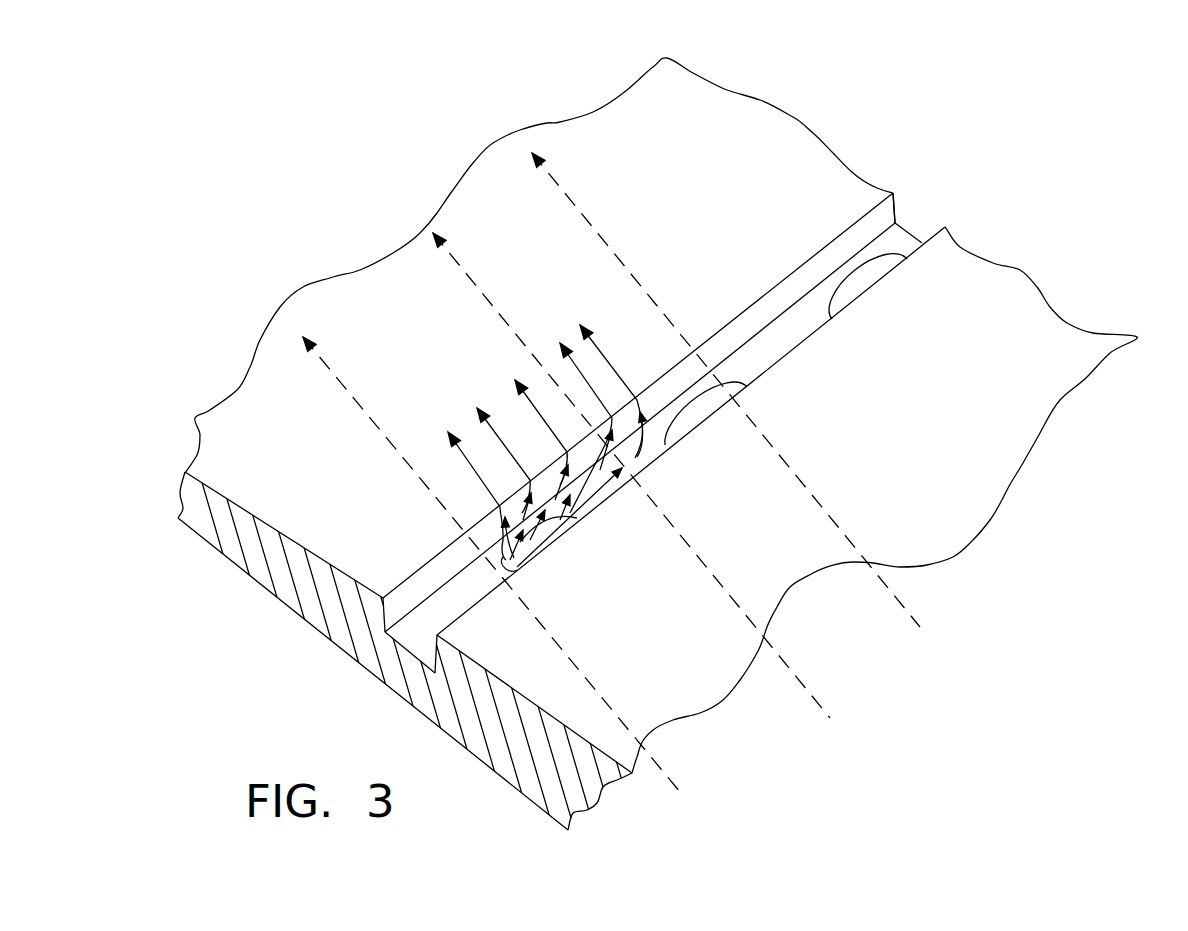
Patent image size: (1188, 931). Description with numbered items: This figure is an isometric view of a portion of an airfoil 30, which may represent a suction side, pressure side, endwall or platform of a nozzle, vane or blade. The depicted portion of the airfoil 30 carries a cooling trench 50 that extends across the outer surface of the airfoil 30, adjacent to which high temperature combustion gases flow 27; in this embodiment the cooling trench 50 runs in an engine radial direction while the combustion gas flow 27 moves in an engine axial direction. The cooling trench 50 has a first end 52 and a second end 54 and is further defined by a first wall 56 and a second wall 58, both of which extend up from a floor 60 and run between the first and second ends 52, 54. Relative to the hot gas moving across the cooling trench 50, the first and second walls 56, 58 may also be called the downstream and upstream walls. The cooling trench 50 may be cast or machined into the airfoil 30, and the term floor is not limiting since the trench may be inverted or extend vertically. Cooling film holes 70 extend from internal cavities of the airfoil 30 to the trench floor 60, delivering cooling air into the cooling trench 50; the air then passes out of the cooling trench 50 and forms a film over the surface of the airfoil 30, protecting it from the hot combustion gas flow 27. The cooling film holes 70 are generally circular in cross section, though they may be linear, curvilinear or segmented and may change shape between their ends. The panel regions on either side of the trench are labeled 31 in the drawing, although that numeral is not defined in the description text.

The combustion gas flow 27 is at (825, 507).
The airfoil 30 is at (1062, 237).
The panel 31 is at (706, 200).
The cooling trench 50 is at (942, 205).
The first end 52 is at (898, 200).
The second end 54 is at (418, 640).
The first wall 56 is at (392, 607).
The second wall 58 is at (445, 622).
The floor 60 is at (433, 613).
The cooling film holes 70 is at (845, 268).